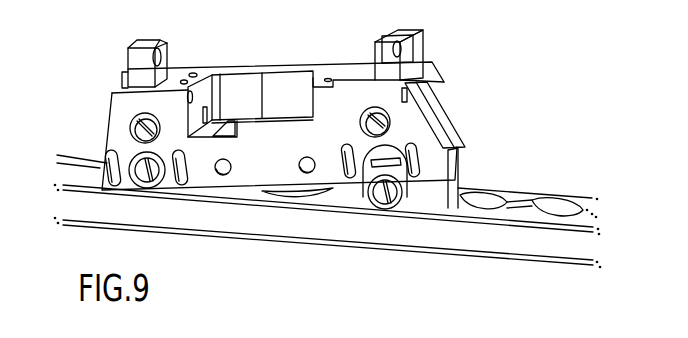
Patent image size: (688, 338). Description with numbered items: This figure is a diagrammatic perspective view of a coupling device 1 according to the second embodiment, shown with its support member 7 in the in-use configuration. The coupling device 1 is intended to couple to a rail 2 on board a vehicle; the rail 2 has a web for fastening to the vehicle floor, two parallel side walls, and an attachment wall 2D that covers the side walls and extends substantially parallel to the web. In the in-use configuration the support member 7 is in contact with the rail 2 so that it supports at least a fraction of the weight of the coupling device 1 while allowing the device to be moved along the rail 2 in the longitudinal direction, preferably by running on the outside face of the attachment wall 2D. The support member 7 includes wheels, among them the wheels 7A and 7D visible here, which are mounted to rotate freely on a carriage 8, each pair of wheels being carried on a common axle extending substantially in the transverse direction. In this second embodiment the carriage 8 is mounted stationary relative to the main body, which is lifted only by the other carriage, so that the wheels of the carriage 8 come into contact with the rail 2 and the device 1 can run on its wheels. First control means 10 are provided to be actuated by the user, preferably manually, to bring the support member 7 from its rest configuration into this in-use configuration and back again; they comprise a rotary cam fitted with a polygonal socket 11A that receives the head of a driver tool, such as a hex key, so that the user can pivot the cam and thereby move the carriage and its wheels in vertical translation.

The coupling device 1 is at (110, 82).
The rail 2 is at (528, 259).
The attachment wall 2D is at (518, 197).
The support member 7 is at (160, 188).
The wheel 7A is at (376, 198).
The wheel 7D is at (140, 186).
The carriage 8 is at (443, 137).
The first control means 10 is at (361, 117).
The polygonal socket 11A is at (386, 121).